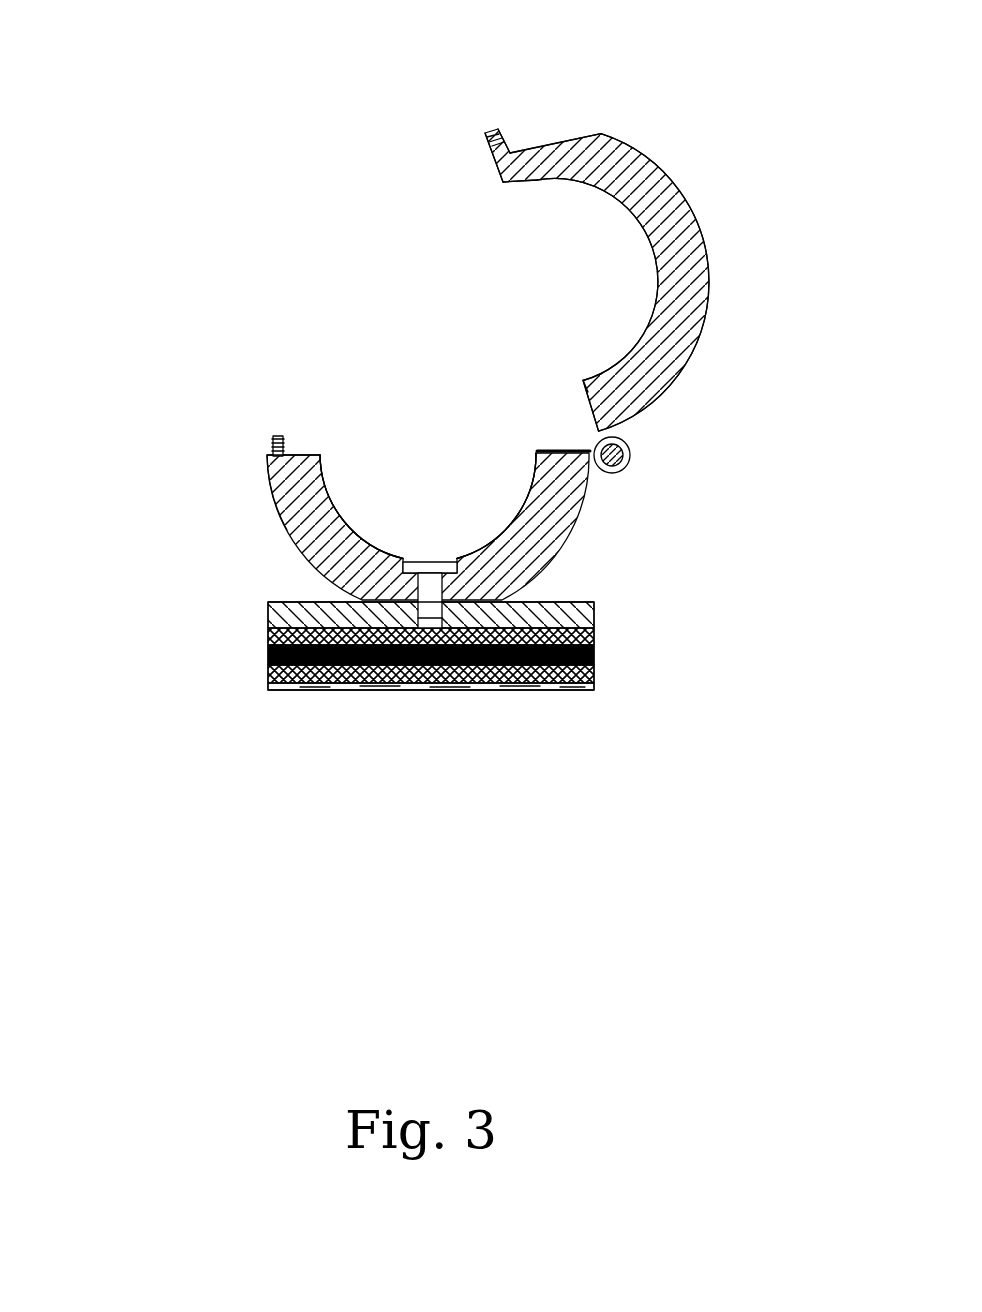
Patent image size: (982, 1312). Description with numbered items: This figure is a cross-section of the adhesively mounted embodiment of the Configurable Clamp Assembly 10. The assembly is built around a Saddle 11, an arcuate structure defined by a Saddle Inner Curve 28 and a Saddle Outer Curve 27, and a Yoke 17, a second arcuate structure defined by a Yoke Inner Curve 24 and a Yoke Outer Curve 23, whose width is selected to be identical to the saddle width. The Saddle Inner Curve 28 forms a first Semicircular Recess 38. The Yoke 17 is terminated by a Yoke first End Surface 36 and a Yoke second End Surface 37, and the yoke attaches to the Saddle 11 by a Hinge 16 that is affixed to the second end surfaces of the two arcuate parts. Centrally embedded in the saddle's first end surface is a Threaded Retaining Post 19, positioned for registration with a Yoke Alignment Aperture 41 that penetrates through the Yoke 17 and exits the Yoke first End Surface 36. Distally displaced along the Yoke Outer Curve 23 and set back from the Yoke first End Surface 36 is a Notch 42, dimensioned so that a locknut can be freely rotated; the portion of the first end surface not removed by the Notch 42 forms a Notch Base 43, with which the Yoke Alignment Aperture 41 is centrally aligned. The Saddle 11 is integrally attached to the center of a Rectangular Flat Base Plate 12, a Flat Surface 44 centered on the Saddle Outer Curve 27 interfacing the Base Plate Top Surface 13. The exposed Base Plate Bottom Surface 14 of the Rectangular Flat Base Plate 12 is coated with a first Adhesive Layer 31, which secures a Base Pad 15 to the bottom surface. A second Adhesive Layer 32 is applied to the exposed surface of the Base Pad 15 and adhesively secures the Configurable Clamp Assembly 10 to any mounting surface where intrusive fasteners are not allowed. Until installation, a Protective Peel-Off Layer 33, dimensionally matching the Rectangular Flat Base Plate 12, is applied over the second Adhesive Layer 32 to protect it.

The Configurable Clamp Assembly 10 is at (232, 112).
The Saddle 11 is at (560, 485).
The Rectangular Flat Base Plate 12 is at (597, 613).
The Base Plate Top Surface 13 is at (428, 707).
The Base Plate Bottom Surface 14 is at (268, 633).
The Base Pad 15 is at (428, 759).
The Hinge 16 is at (632, 460).
The Yoke 17 is at (690, 183).
The Threaded Retaining Post 19 is at (275, 435).
The Yoke Outer Curve 23 is at (707, 308).
The Yoke Inner Curve 24 is at (642, 239).
The Saddle Outer Curve 27 is at (275, 515).
The Saddle Inner Curve 28 is at (497, 541).
The 1st Adhesive Layer 31 is at (595, 635).
The 2nd Adhesive Layer 32 is at (595, 673).
The Protective Peel-Off Layer 33 is at (560, 687).
The Yoke 1st End Surface 36 is at (488, 178).
The Yoke 2nd End Surface 37 is at (595, 433).
The 1st Semicircular Recess 38 is at (410, 497).
The Yoke Alignment Aperture 41 is at (488, 152).
The Notch 42 is at (567, 137).
The Notch Base 43 is at (510, 155).
The Flat Surface 44 is at (395, 601).